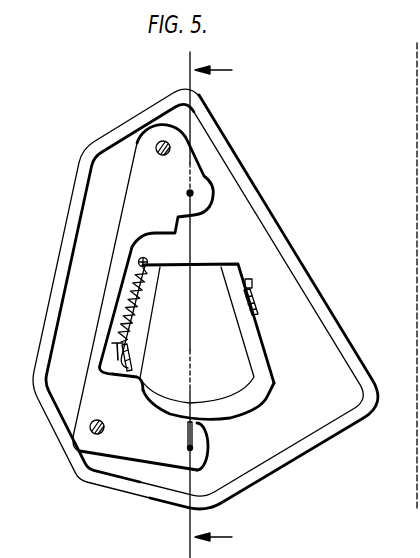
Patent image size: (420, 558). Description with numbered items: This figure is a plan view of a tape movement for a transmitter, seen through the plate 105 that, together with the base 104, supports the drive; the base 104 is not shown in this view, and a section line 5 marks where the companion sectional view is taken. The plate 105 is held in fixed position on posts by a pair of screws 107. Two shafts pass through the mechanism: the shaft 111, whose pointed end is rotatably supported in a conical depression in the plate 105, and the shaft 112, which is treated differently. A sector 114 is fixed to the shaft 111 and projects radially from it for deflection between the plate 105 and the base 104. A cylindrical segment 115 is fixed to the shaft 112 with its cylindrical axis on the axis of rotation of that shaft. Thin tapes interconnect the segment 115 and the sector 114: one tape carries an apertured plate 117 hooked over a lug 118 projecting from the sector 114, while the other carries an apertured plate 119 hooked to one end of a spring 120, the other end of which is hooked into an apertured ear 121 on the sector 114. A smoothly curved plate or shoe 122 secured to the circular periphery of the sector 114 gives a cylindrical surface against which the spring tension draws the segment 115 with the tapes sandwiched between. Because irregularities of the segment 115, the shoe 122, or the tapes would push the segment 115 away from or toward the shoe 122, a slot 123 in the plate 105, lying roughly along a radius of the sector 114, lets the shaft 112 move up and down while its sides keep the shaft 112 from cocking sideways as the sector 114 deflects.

The section line indicator 5 is at (225, 304).
The base 104 is at (203, 152).
The plate 105 is at (143, 153).
The screws 107 is at (100, 437).
The shaft 111 is at (190, 193).
The shaft 112 is at (188, 448).
The sector 114 is at (262, 383).
The cylindrical segment 115 is at (191, 446).
The apertured plate 117 is at (256, 306).
The lug 118 is at (252, 284).
The apertured plate 119 is at (115, 345).
The spring 120 is at (140, 300).
The apertured ear 121 is at (138, 262).
The plate or shoe 122 is at (223, 417).
The slot 123 is at (208, 465).